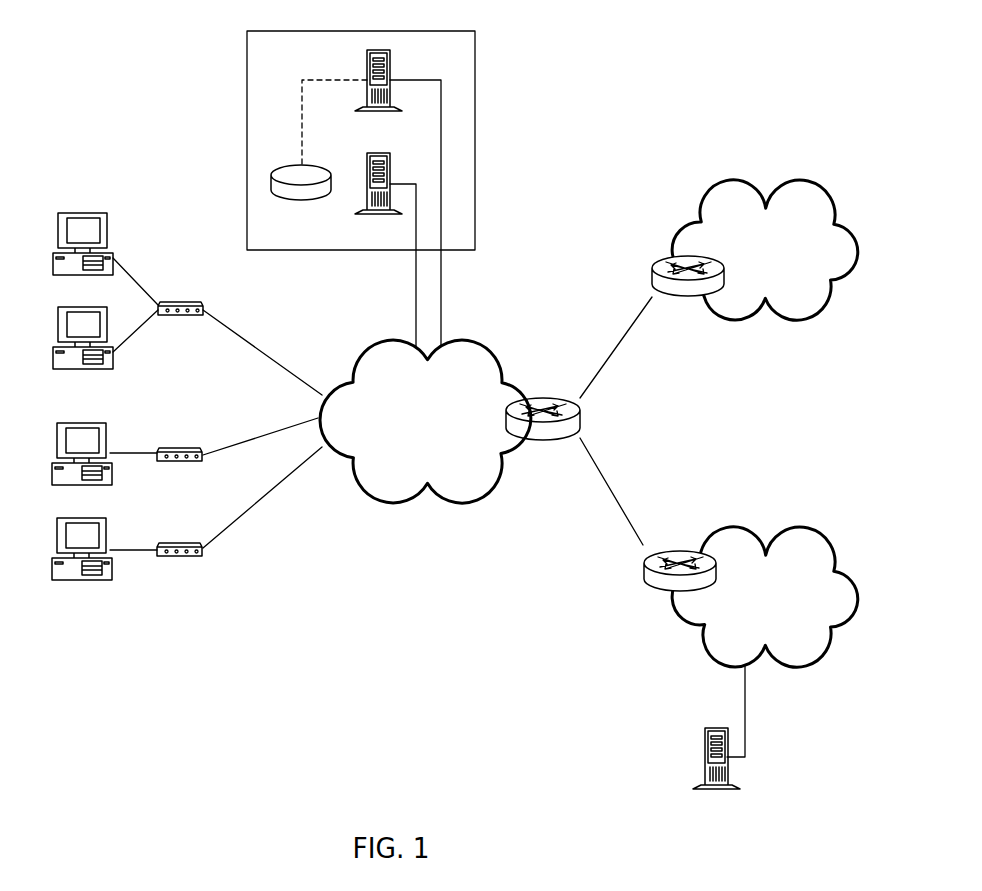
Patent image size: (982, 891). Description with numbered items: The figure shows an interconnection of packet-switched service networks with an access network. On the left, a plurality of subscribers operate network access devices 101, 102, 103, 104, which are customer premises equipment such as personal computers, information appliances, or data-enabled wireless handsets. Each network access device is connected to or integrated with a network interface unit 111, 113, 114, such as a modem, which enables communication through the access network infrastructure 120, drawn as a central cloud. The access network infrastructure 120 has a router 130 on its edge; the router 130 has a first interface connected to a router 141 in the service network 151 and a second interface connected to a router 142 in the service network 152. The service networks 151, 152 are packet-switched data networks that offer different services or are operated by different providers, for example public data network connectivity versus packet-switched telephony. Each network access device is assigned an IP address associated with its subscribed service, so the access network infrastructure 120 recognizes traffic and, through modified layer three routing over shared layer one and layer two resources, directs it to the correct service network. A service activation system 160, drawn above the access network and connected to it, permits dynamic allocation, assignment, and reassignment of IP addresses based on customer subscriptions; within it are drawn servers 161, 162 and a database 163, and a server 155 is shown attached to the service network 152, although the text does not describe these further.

The network access device 101 is at (83, 254).
The network access device 102 is at (83, 348).
The network access device 103 is at (82, 464).
The network access device 104 is at (82, 559).
The network interface unit 111 is at (180, 320).
The network interface unit 113 is at (179, 466).
The network interface unit 114 is at (179, 561).
The access network infrastructure 120 is at (425, 421).
The router 130 is at (543, 435).
The router 141 is at (688, 293).
The router 142 is at (680, 587).
The service network 151 is at (765, 250).
The service network 152 is at (765, 597).
The server 155 is at (716, 769).
The service activation system 160 is at (361, 140).
The server 161 is at (378, 91).
The server 162 is at (378, 194).
The database 163 is at (301, 193).